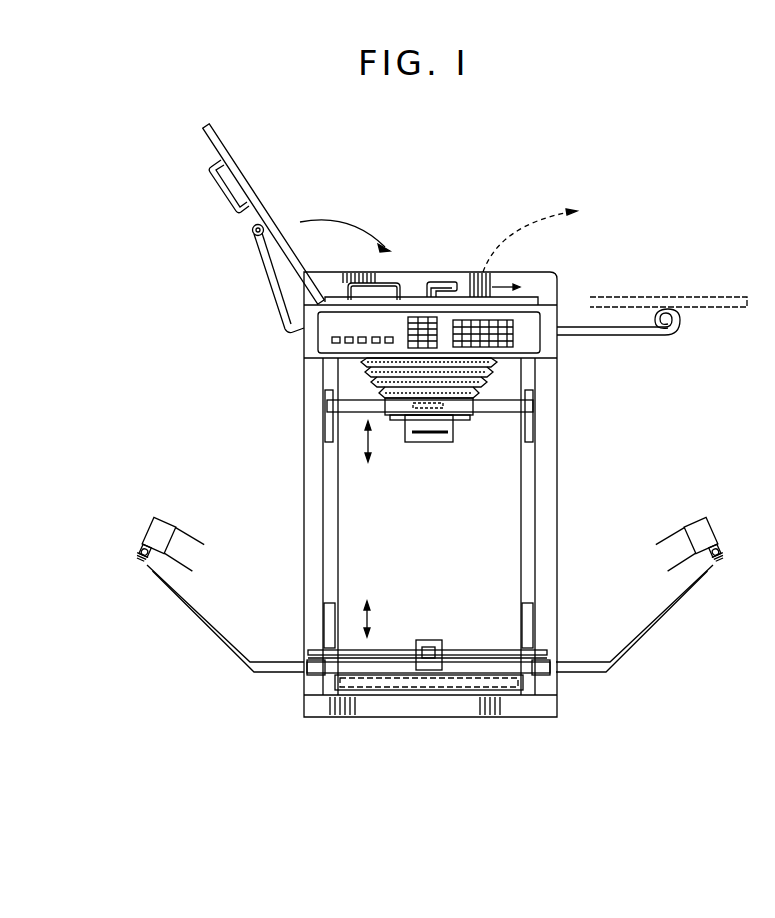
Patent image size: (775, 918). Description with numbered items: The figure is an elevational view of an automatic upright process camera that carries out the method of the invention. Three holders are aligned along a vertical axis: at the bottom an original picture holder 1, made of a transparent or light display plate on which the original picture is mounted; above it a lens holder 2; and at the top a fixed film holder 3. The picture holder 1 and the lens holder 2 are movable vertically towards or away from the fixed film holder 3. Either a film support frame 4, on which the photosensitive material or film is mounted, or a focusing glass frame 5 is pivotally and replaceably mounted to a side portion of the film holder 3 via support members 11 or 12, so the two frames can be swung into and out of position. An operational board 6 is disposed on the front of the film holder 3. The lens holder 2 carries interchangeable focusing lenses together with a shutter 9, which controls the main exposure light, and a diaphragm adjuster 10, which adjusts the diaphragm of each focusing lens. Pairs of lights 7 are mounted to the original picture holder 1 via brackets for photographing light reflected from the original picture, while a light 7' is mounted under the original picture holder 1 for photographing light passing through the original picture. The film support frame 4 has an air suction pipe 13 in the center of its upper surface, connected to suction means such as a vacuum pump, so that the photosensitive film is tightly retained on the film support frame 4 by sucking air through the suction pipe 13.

The original picture holder 1 is at (465, 648).
The lens holder 2 is at (470, 408).
The film holder 3 is at (553, 347).
The film support frame 4 is at (530, 297).
The focusing glass frame 5 is at (248, 173).
The operational board 6 is at (322, 337).
The lights 7 is at (430, 576).
The light 7' is at (467, 690).
The shutter 9 is at (405, 405).
The diaphragm adjuster 10 is at (423, 434).
The support member 11 is at (647, 337).
The support member 12 is at (272, 287).
The air suction pipe 13 is at (443, 282).